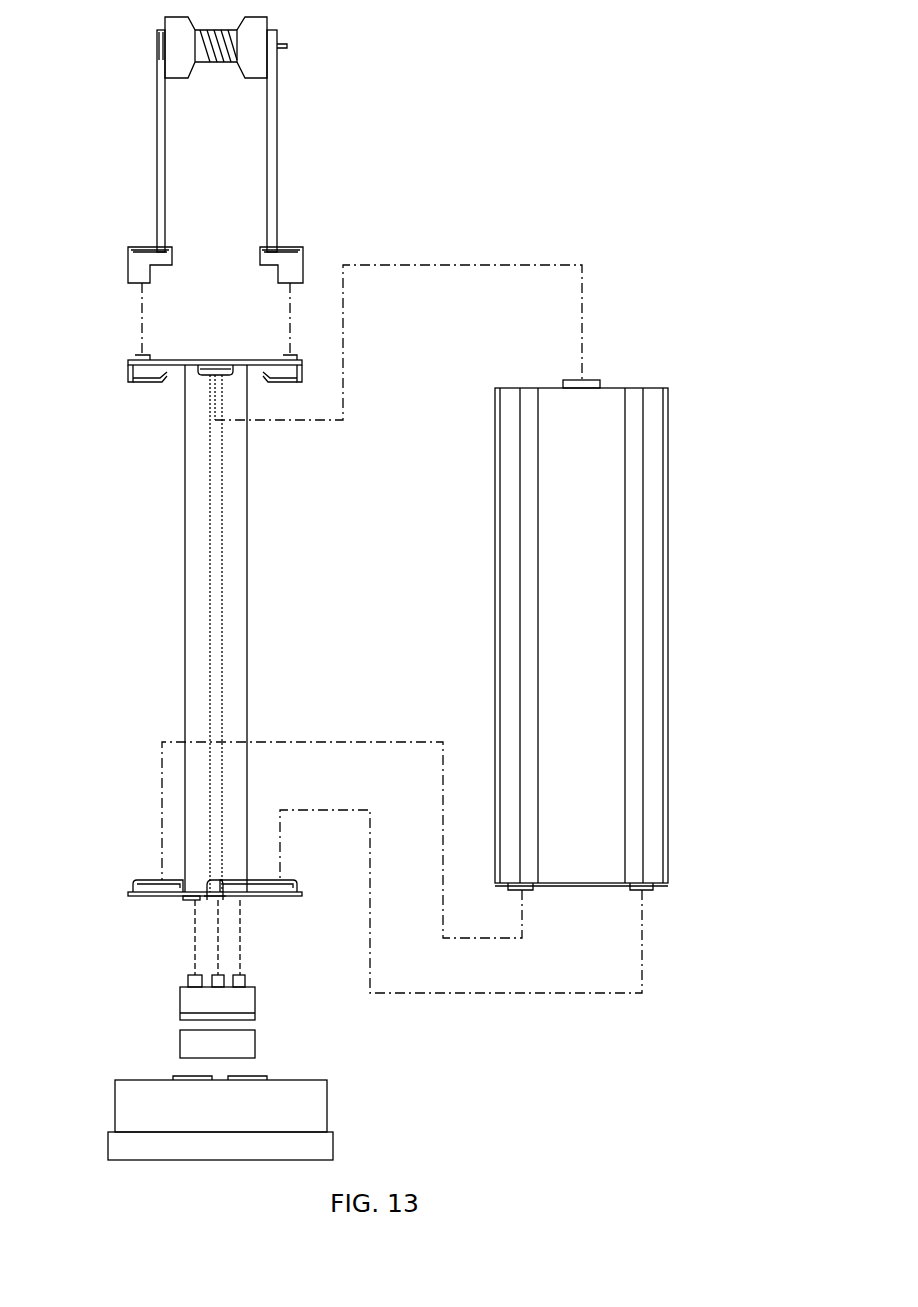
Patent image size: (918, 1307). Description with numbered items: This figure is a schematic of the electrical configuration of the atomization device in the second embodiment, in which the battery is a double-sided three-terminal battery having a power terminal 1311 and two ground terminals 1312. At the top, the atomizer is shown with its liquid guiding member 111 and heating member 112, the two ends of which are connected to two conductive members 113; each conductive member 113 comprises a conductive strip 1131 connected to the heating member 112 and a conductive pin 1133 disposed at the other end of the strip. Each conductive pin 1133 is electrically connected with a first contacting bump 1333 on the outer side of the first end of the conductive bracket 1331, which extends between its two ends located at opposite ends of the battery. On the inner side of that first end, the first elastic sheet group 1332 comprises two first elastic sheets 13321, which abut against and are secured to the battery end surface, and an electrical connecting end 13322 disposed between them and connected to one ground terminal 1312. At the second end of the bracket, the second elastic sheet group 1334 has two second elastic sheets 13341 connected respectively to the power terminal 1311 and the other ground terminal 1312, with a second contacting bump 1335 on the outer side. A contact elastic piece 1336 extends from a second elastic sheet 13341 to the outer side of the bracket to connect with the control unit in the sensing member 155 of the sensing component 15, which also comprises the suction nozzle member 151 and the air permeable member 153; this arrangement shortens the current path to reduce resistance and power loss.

The liquid guiding member 111 is at (183, 58).
The heating member 112 is at (157, 45).
The conductive member 113 is at (156, 156).
The conductive strip 1131 is at (157, 183).
The conductive pin 1133 is at (148, 254).
The power terminal 1311 is at (645, 888).
The ground terminal 1312 is at (585, 380).
The conductive bracket 1331 is at (195, 560).
The first elastic sheet group 1332 is at (151, 415).
The first elastic sheet 13321 is at (160, 378).
The electrical connecting end 13322 is at (215, 372).
The first contacting bump 1333 is at (140, 360).
The second elastic sheet group 1334 is at (172, 876).
The second elastic sheet 13341 is at (150, 882).
The second contacting bump 1335 is at (190, 897).
The contact elastic piece 1336 is at (215, 898).
The sensing component 15 is at (180, 1067).
The suction nozzle member 151 is at (199, 1118).
The air permeable member 153 is at (205, 1051).
The sensing member 155 is at (205, 1004).